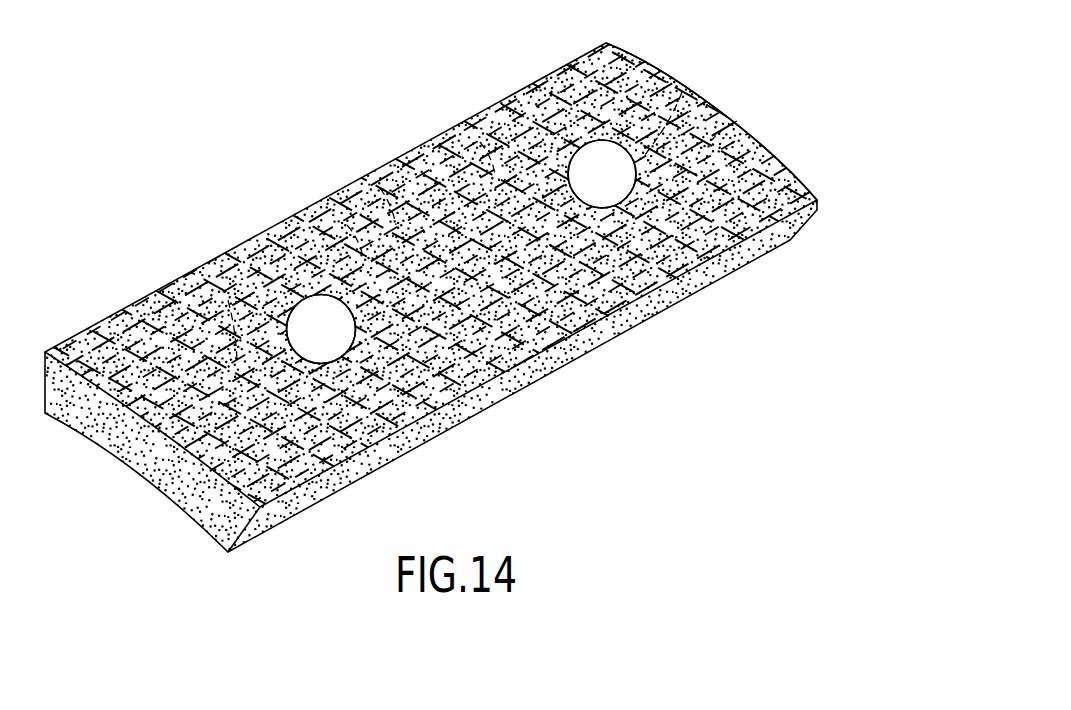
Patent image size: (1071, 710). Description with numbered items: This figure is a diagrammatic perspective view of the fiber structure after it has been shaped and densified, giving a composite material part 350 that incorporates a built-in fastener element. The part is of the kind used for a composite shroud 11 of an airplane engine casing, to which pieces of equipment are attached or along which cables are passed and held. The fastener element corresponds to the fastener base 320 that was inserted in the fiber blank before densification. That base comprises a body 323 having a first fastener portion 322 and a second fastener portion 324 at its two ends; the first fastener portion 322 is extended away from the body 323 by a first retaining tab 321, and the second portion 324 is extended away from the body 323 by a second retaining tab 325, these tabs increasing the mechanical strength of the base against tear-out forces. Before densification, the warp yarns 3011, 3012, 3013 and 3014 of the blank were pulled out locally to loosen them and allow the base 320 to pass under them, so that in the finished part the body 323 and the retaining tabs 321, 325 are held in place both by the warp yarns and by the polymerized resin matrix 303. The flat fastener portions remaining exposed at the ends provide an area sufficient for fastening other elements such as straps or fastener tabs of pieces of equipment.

The shroud 11 is at (763, 157).
The composite material part 350 is at (715, 95).
The backing plate 303 is at (657, 302).
The fastener base 320 is at (623, 137).
The first retaining tab 321 is at (272, 352).
The first fastener portion 322 is at (312, 320).
The body 323 is at (380, 188).
The second fastener portion 324 is at (592, 168).
The second retaining tab 325 is at (682, 92).
The warp yarn 3011 is at (175, 283).
The warp yarn 3012 is at (316, 202).
The warp yarn 3013 is at (453, 126).
The warp yarn 3014 is at (737, 121).